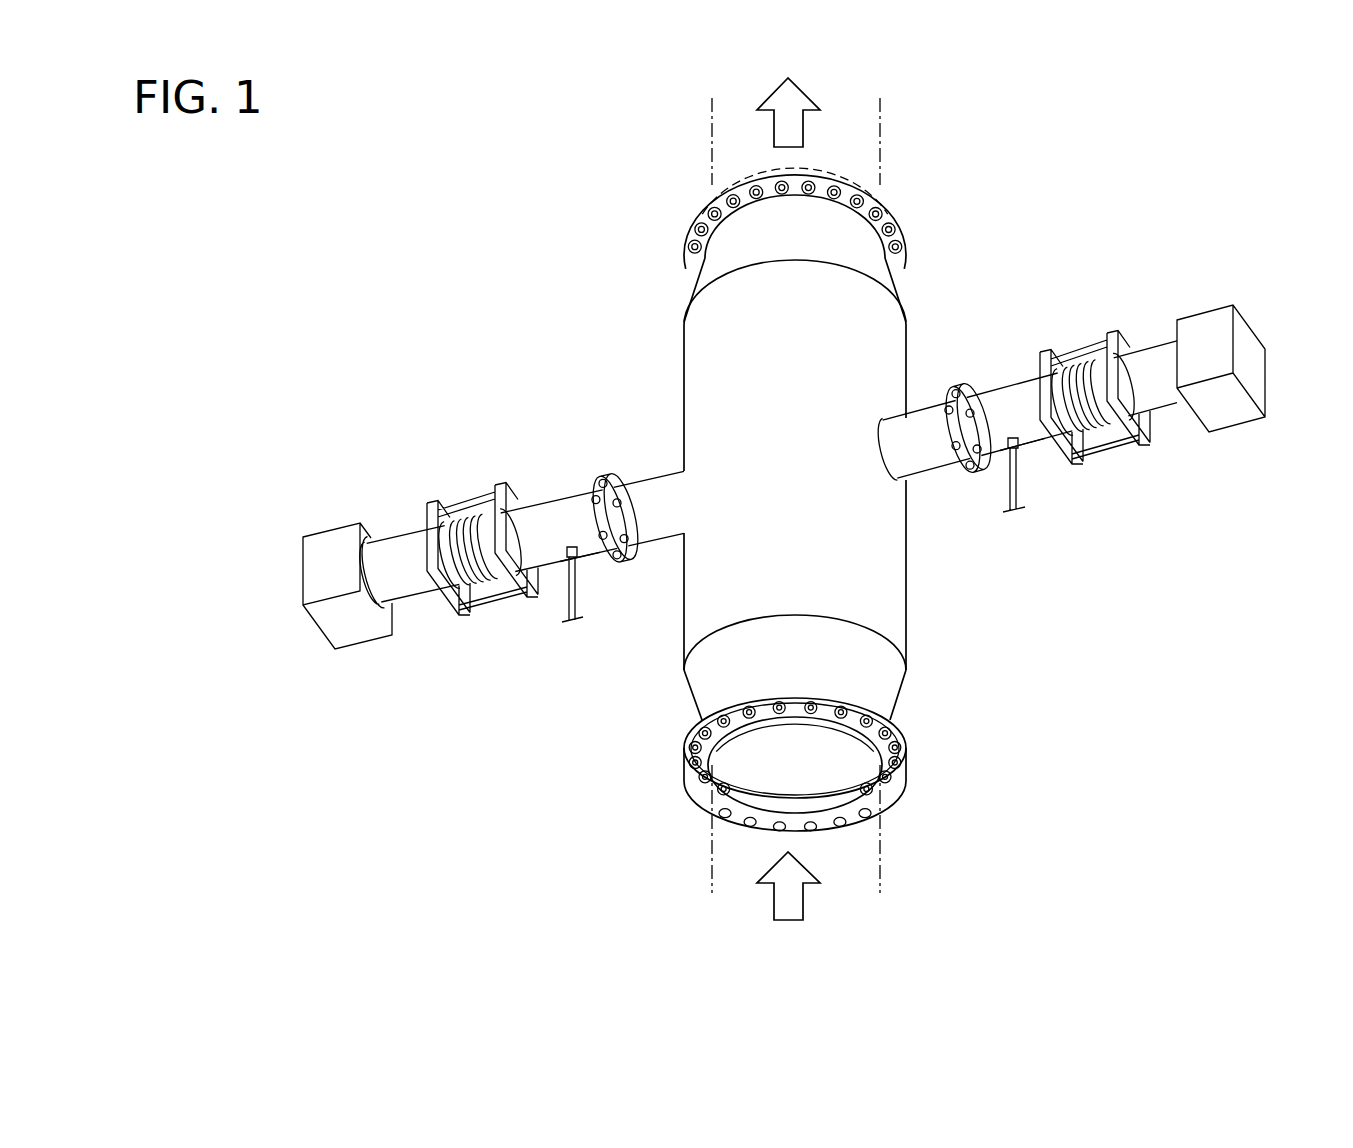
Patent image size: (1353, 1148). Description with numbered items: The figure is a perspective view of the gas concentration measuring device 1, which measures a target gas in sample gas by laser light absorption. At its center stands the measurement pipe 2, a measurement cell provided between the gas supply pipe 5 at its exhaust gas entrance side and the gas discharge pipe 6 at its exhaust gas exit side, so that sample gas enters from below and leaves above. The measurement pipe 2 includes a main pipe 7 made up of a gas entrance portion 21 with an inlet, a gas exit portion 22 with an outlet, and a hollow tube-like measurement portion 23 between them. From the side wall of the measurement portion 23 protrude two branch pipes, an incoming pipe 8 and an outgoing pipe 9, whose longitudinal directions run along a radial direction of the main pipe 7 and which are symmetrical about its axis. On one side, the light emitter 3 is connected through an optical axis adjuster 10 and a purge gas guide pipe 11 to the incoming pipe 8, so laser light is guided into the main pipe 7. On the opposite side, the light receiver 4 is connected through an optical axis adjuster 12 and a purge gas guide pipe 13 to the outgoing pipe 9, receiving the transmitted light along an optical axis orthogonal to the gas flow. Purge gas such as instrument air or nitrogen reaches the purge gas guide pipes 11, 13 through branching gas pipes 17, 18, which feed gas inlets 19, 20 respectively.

The gas concentration measuring device 1 is at (1025, 211).
The measurement pipe 2 is at (890, 576).
The light emitter 3 is at (352, 530).
The light receiver 4 is at (1200, 323).
The gas supply pipe 5 is at (728, 852).
The gas discharge pipe 6 is at (862, 143).
The main pipe 7 is at (700, 345).
The incoming pipe 8 is at (648, 487).
The outgoing pipe 9 is at (915, 420).
The optical axis adjuster 10 is at (482, 518).
The purge gas guide pipe 11 is at (567, 508).
The optical axis adjuster 12 is at (1082, 372).
The purge gas guide pipe 13 is at (990, 407).
The gas pipe 17 is at (578, 613).
The gas pipe 18 is at (1023, 503).
The gas inlet 19 is at (580, 560).
The gas inlet 20 is at (1022, 442).
The gas entrance portion 21 is at (897, 690).
The gas exit portion 22 is at (707, 278).
The measurement portion 23 is at (902, 623).